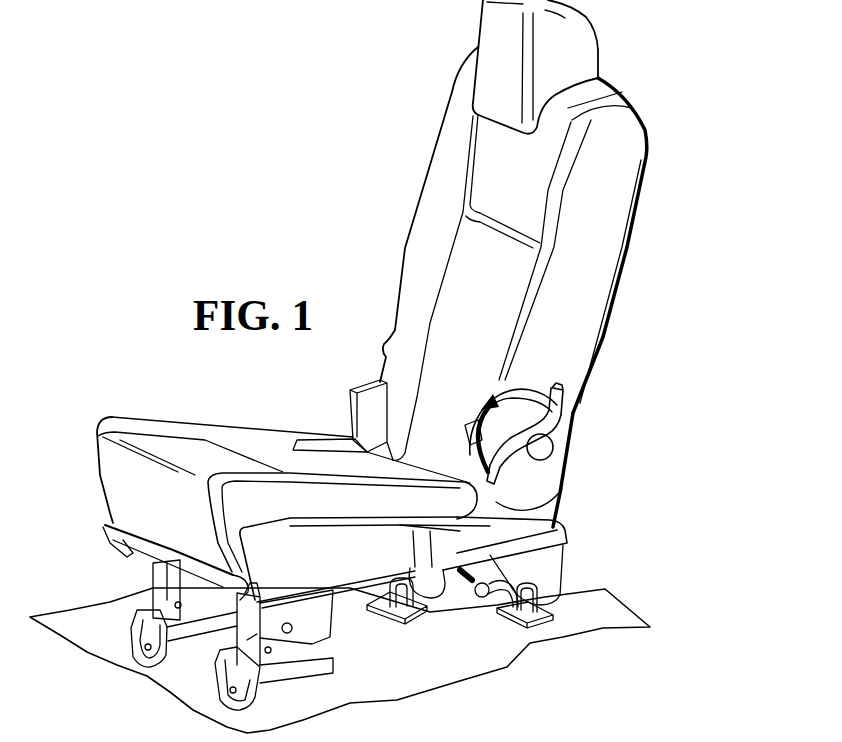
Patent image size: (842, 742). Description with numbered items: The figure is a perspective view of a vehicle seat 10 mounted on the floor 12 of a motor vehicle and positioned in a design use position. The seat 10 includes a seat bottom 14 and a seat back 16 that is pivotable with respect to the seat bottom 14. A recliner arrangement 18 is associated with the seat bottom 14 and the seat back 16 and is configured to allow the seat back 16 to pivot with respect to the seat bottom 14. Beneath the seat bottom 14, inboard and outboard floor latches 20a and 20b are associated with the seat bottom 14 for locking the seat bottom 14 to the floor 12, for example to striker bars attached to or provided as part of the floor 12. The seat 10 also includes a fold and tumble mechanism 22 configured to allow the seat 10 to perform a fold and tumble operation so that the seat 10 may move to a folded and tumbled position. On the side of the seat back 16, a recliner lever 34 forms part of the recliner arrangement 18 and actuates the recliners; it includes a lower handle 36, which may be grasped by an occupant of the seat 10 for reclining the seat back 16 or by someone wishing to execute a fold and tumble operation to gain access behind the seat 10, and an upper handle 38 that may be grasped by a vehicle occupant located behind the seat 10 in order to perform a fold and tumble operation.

The vehicle seat 10 is at (325, 218).
The floor 12 is at (406, 670).
The seat bottom 14 is at (153, 450).
The seat back 16 is at (607, 250).
The recliner arrangement 18 is at (599, 418).
The inboard floor latch 20a is at (450, 594).
The outboard floor latch 20b is at (576, 605).
The fold and tumble mechanism 22 is at (585, 483).
The recliner lever 34 is at (566, 440).
The lower handle 36 is at (560, 507).
The upper handle 38 is at (558, 386).